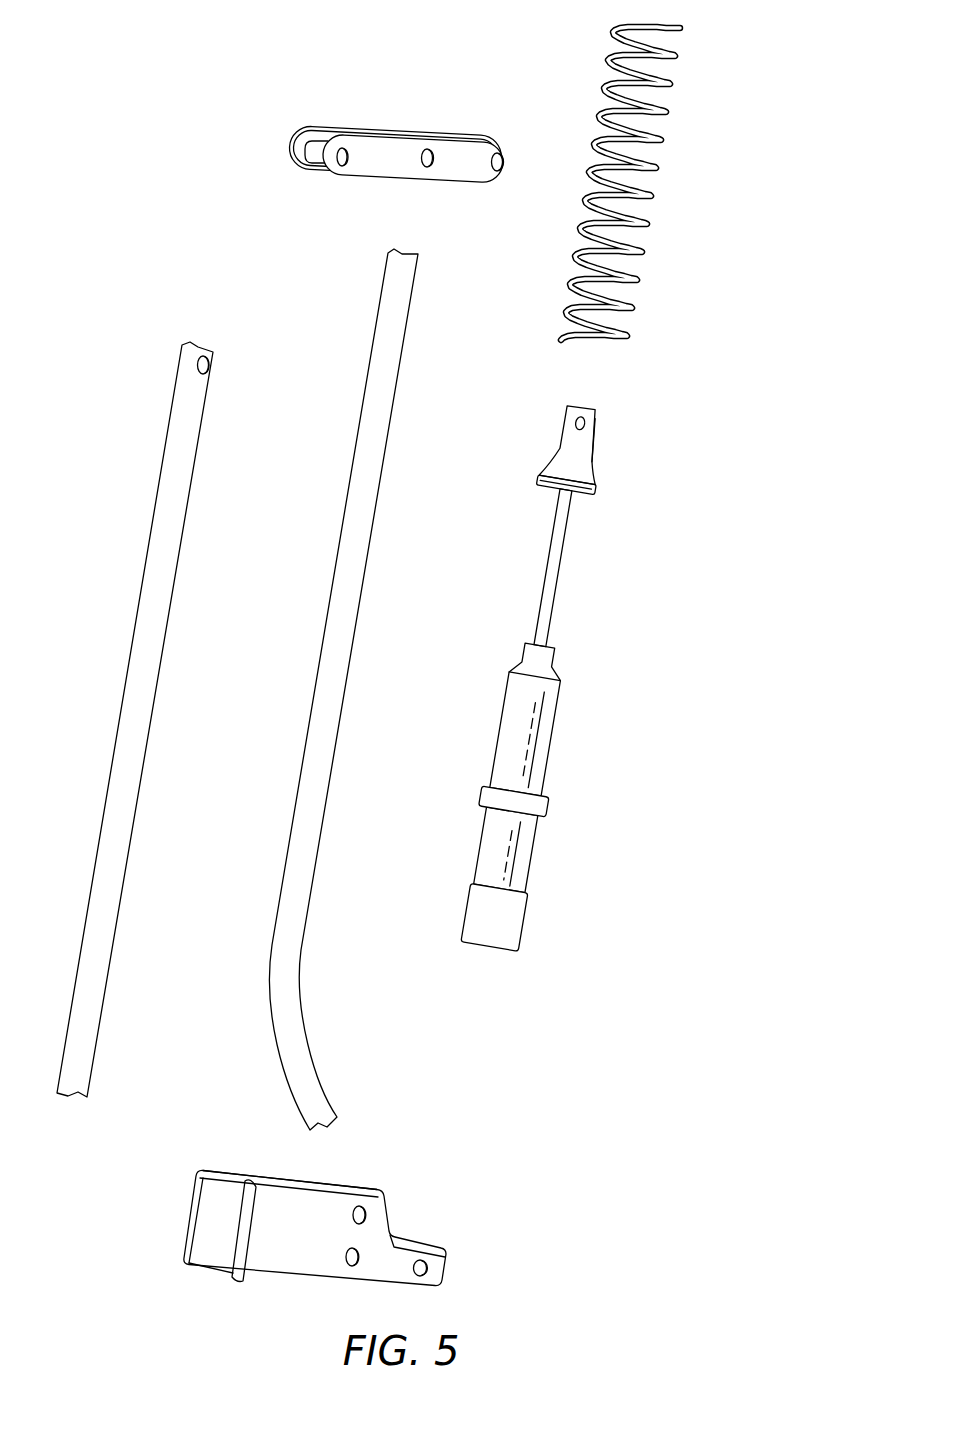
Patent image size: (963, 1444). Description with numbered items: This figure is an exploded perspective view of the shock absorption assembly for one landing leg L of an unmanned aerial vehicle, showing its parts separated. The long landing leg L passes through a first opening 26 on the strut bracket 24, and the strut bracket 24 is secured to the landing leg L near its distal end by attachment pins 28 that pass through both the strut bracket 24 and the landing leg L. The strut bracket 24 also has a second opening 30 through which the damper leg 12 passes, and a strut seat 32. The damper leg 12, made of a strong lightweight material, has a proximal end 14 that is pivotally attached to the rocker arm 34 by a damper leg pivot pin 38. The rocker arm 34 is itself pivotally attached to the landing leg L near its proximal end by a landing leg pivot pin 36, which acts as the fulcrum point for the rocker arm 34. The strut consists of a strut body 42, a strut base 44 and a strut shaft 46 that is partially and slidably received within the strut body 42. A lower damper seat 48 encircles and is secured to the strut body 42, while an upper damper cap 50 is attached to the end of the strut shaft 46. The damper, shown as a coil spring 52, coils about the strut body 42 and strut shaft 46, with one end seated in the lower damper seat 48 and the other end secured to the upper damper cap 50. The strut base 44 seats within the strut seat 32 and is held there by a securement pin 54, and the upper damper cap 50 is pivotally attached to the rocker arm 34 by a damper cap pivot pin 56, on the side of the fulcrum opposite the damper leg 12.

The damper leg 12 is at (127, 681).
The proximal end 14 is at (187, 363).
The landing leg L is at (366, 563).
The strut bracket 24 is at (319, 1215).
The first opening 26 is at (330, 1178).
The attachment pins 28 is at (366, 1212).
The second opening 30 is at (242, 1172).
The strut seat 32 is at (407, 1242).
The rocker arm 34 is at (390, 137).
The landing leg pivot pin 36 is at (428, 150).
The damper leg pivot pin 38 is at (335, 170).
The strut body 42 is at (525, 745).
The strut base 44 is at (518, 912).
The strut shaft 46 is at (563, 560).
The lower damper seat 48 is at (540, 807).
The upper damper cap 50 is at (580, 465).
The coil spring 52 is at (642, 255).
The securement pin 54 is at (428, 1267).
The damper cap pivot pin 56 is at (497, 152).